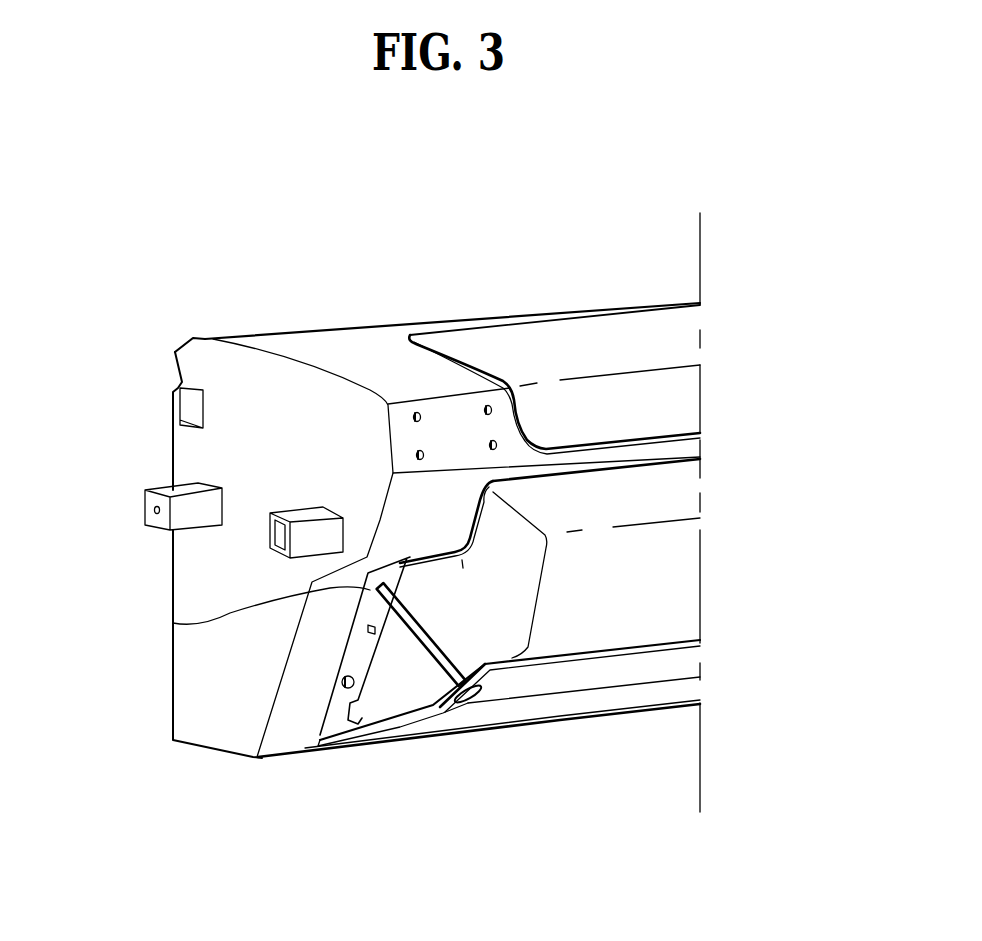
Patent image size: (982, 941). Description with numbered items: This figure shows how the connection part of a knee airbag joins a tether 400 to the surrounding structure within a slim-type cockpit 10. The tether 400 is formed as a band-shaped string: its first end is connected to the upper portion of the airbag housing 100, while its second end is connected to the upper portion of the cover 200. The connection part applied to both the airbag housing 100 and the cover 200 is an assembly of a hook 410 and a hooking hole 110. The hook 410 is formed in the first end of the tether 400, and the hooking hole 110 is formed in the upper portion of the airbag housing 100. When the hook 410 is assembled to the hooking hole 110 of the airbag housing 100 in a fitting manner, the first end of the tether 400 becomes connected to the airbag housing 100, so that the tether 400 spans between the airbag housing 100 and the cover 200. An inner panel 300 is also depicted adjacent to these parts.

The slim-type cockpit 10 is at (365, 322).
The airbag housing 100 is at (345, 657).
The hooking hole 110 is at (173, 623).
The cover 200 is at (625, 695).
The inner panel 300 is at (653, 595).
The tether 400 is at (413, 640).
The hook 410 is at (472, 700).